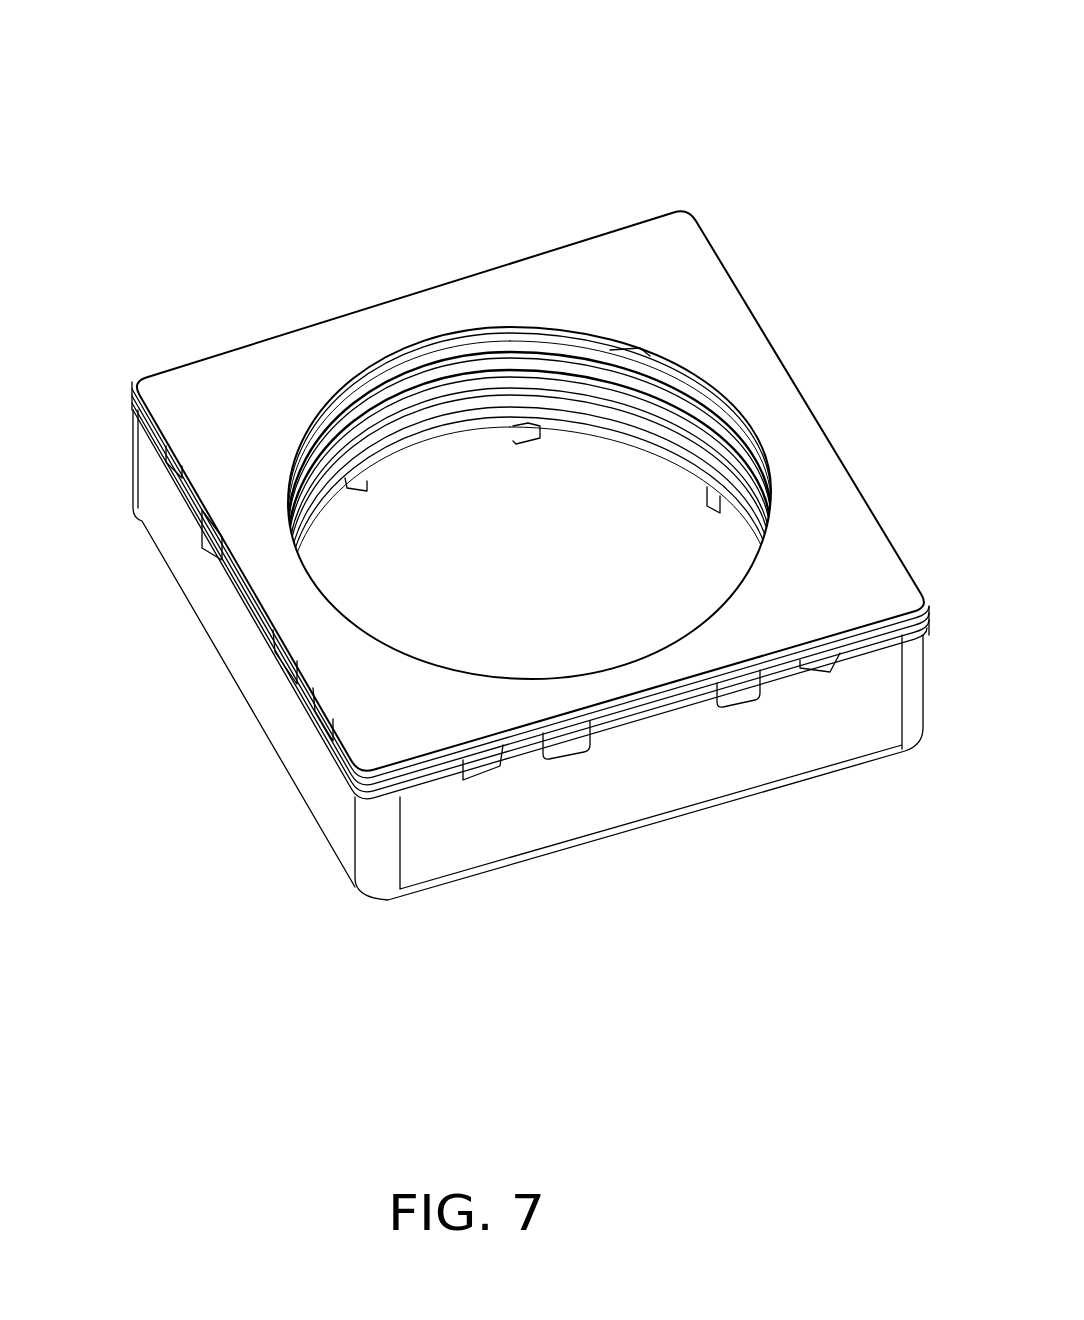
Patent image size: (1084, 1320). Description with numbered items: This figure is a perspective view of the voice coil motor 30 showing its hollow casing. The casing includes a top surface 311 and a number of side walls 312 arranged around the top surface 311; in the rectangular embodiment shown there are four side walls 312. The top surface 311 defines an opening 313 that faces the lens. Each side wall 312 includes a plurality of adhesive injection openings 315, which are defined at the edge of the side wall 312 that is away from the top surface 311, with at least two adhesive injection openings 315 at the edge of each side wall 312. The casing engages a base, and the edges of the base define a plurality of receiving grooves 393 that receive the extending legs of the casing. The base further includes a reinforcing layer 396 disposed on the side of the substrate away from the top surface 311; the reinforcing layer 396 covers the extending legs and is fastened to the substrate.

The lens holder 30 is at (252, 52).
The top surface 311 is at (501, 528).
The side wall 312 is at (212, 648).
The opening 313 is at (580, 510).
The adhesive injection opening 315 is at (213, 535).
The receiving groove 393 is at (547, 745).
The reinforcing layer 396 is at (681, 243).